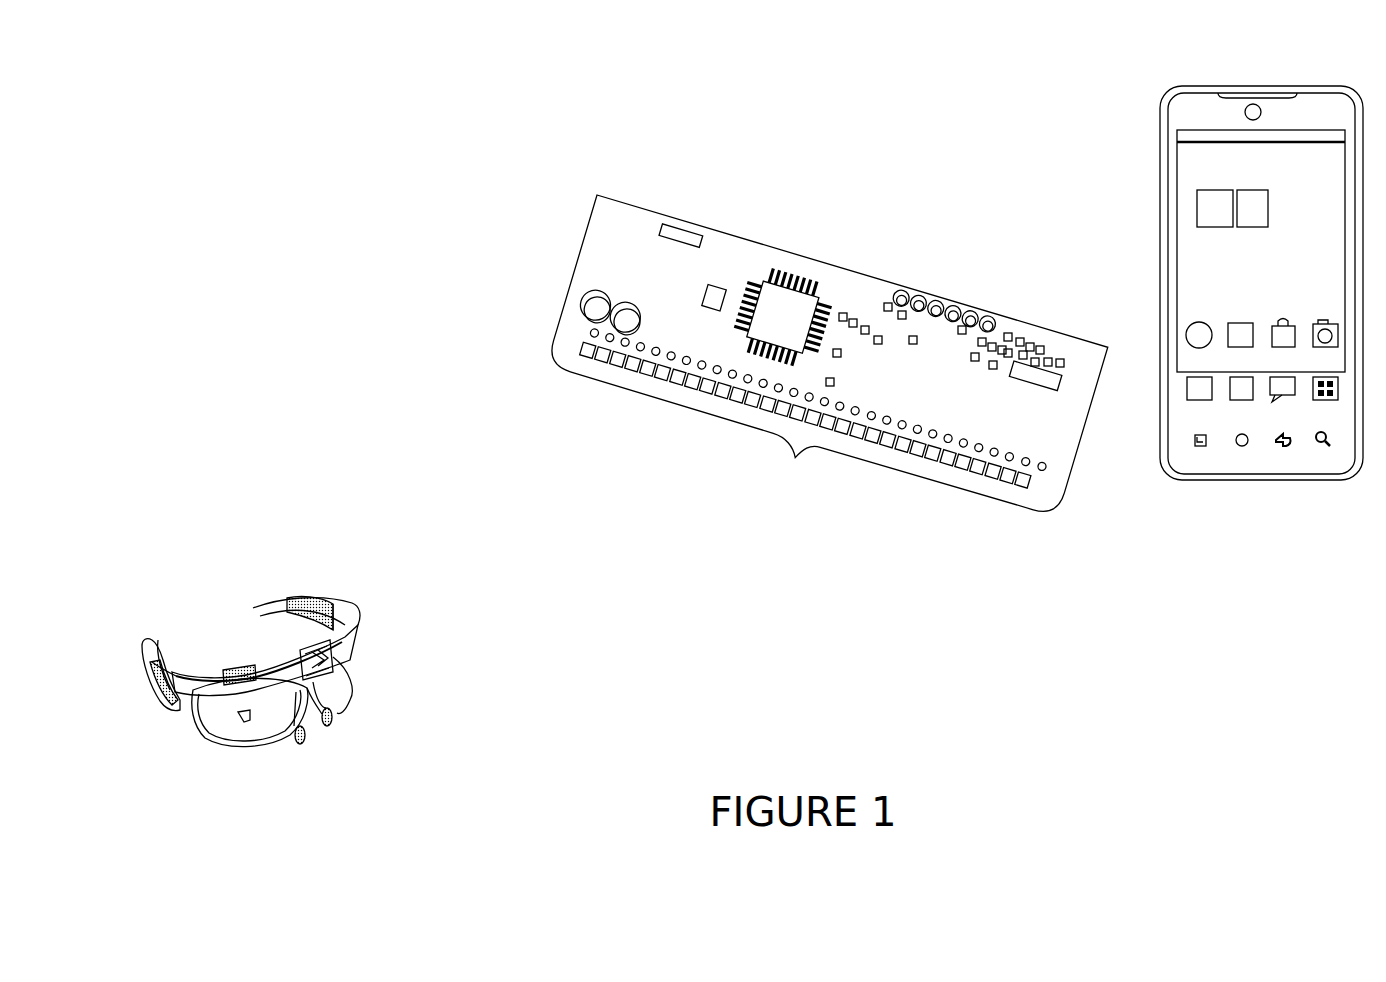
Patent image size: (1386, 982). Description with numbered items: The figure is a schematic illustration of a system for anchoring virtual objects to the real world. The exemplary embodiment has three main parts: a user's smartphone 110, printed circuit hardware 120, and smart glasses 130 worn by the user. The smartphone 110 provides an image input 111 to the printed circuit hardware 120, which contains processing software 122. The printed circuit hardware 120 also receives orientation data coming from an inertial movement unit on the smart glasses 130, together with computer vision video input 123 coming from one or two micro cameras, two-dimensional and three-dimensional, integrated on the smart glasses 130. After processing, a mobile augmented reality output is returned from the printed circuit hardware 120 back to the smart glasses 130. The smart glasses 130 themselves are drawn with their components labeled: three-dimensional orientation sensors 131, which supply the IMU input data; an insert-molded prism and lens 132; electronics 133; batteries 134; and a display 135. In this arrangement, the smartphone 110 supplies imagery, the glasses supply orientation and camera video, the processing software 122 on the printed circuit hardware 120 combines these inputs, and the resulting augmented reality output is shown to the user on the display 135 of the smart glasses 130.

The smartphone 110 is at (1240, 482).
The image input 111 is at (952, 283).
The printed circuit hardware 120 is at (824, 373).
The processing software 122 is at (790, 310).
The computer vision video input 123 is at (683, 268).
The smart glasses 130 is at (118, 563).
The 3D orientation sensors 131 is at (330, 724).
The insert-molded prism and lens 132 is at (240, 718).
The electronics 133 is at (332, 650).
The batteries 134 is at (153, 685).
The display 135 is at (233, 660).